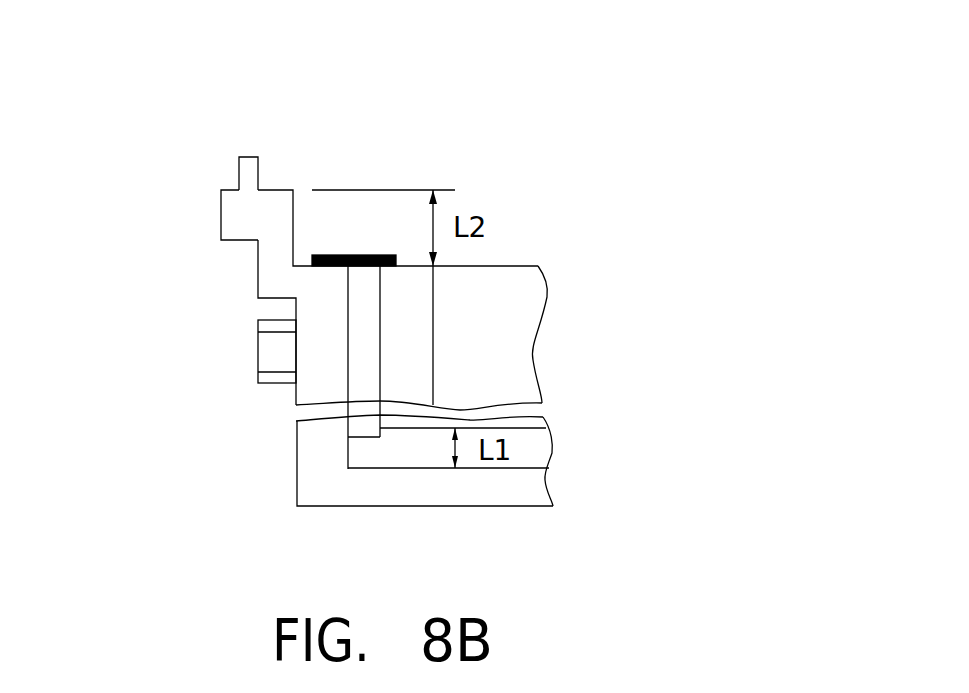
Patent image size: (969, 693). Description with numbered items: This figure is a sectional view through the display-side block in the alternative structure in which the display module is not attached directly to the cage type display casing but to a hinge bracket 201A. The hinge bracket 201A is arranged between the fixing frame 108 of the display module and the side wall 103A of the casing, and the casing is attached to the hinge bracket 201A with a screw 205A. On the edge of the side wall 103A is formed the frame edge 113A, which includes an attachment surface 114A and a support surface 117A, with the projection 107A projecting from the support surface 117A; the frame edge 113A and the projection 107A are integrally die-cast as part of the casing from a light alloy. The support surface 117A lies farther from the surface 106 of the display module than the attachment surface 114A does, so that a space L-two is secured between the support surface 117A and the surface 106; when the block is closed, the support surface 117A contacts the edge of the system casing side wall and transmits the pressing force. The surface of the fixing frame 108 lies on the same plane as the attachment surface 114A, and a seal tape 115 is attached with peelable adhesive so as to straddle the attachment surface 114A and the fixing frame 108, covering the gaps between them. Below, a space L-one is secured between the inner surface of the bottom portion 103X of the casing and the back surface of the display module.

The projection 107A is at (250, 157).
The support surface 117A is at (278, 190).
The hinge bracket 201A is at (358, 322).
The screw 205A is at (258, 356).
The seal tape 115 is at (360, 255).
The attachment surface 114A is at (301, 265).
The surface of the display module 106 is at (505, 266).
The fixing frame 108 is at (428, 352).
The side wall 103A is at (296, 405).
The bottom portion 103X is at (412, 509).
The frame edge 113A is at (504, 82).